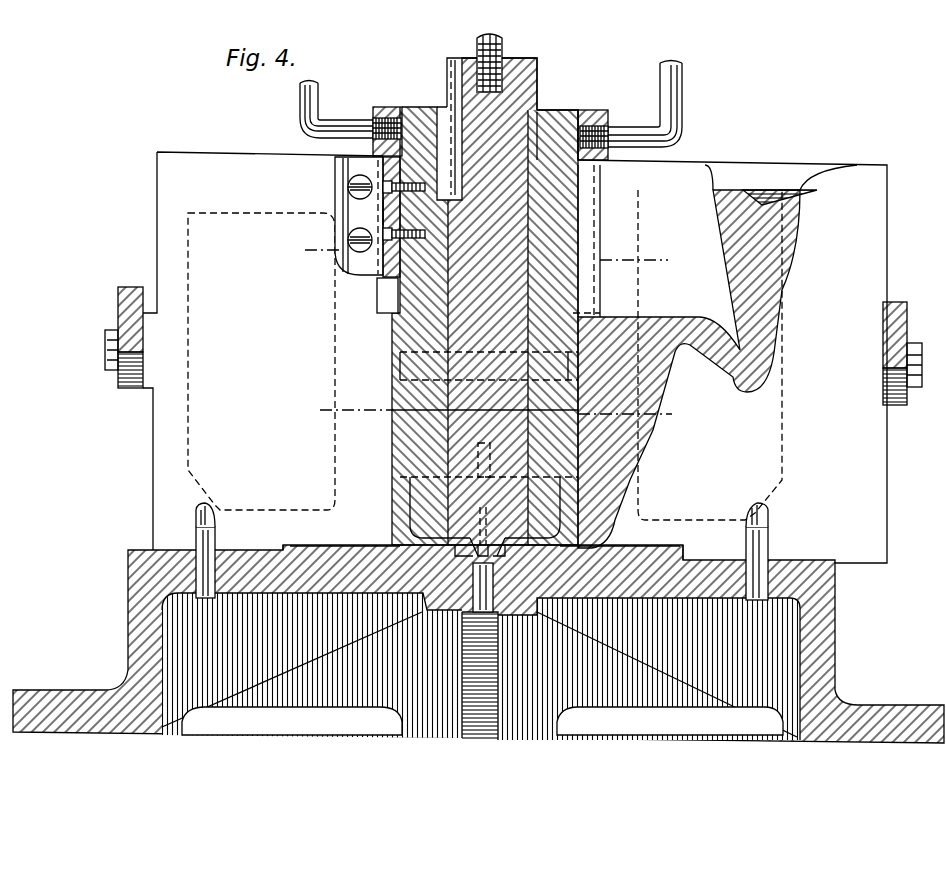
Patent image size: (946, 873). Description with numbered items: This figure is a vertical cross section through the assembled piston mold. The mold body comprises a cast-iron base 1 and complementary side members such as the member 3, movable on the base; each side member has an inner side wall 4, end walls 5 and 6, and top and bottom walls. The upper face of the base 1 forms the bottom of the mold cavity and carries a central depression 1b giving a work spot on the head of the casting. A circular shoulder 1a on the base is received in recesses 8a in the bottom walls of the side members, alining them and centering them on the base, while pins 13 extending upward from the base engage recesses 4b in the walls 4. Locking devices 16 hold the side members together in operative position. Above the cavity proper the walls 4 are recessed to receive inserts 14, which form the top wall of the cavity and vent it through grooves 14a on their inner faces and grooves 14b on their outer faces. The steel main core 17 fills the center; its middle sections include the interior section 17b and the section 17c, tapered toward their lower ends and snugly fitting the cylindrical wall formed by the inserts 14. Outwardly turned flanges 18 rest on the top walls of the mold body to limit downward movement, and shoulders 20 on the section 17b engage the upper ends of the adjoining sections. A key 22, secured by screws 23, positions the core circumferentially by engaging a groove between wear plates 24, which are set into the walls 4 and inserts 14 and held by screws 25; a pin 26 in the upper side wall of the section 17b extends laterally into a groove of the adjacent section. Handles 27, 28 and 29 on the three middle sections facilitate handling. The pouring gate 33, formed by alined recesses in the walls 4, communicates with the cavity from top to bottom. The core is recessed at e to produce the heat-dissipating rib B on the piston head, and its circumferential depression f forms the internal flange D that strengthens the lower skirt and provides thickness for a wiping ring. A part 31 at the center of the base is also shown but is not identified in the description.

The base 1 is at (128, 631).
The circular shoulder 1a is at (485, 559).
The central depression 1b is at (470, 577).
The complementary member 3 is at (173, 152).
The inner side wall 4 is at (485, 355).
The recesses 4b is at (776, 518).
The end wall 5 is at (485, 255).
The end wall 6 is at (493, 413).
The recess 8a is at (300, 537).
The pins 13 is at (210, 545).
The inserts 14 is at (385, 290).
The grooves 14a is at (395, 303).
The grooves 14b is at (600, 250).
The locking devices 16 is at (118, 311).
The main core 17 is at (378, 496).
The interior middle core section 17b is at (505, 92).
The middle core section 17c is at (560, 112).
The outwardly turned flanges 18 is at (378, 107).
The shoulders 20 is at (543, 115).
The key 22 is at (369, 214).
The screws 23 is at (388, 190).
The wear plates 24 is at (342, 166).
The screws 25 is at (350, 184).
The pin 26 is at (445, 112).
The handle 27 is at (298, 104).
The handle 28 is at (477, 40).
The handle 29 is at (684, 78).
The shaft 31 is at (494, 583).
The pouring gate 33 is at (722, 372).
The internal circumferential flange D is at (392, 361).
The circumferential depression f is at (392, 375).
The recess e is at (483, 494).
The heat dissipating rib B is at (478, 523).